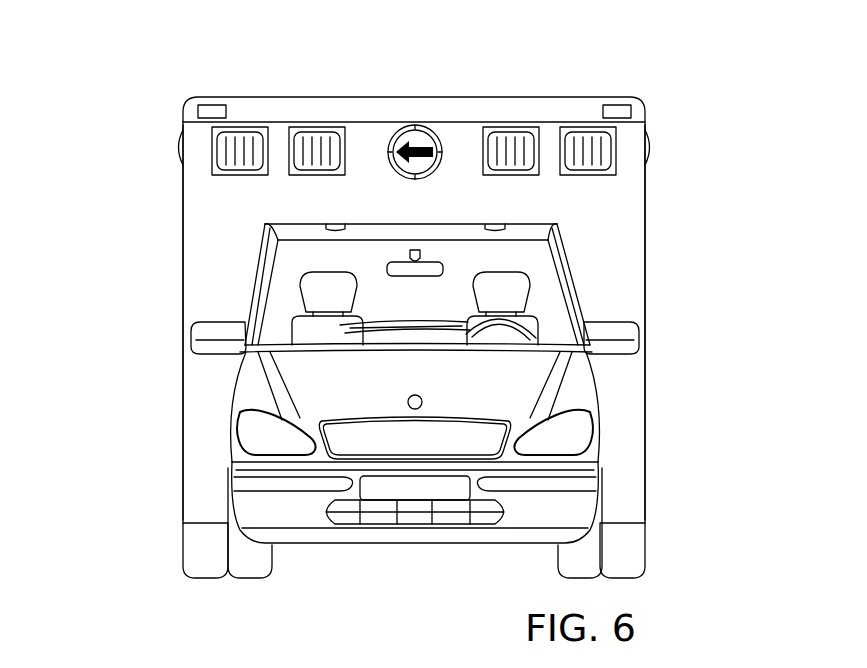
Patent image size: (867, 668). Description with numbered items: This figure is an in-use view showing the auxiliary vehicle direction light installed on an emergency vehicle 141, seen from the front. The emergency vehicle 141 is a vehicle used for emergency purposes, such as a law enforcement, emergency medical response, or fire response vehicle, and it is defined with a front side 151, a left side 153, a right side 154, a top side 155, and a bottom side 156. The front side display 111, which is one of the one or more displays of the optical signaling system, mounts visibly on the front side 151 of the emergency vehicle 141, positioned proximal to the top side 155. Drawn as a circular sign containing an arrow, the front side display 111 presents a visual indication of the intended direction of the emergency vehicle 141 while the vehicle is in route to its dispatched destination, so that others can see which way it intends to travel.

The emergency vehicle 141 is at (160, 96).
The front side 151 is at (600, 242).
The left side 153 is at (645, 298).
The right side 154 is at (183, 273).
The top side 155 is at (340, 97).
The front side display 111 is at (420, 127).
The bottom side 156 is at (298, 540).